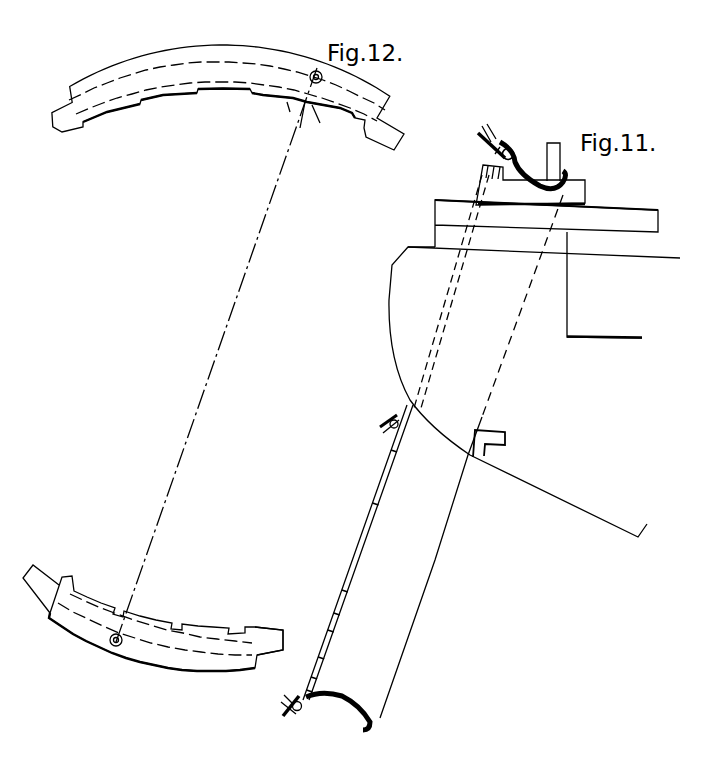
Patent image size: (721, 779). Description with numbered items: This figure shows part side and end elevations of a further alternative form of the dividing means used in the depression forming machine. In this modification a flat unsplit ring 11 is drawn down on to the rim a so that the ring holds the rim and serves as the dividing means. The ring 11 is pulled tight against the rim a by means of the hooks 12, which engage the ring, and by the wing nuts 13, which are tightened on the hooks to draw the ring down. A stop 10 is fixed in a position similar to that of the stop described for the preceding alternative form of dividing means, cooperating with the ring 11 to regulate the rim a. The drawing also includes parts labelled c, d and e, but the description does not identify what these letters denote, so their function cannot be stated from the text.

In FIG. 12, the stop 10 is at (311, 128).
In FIG. 12, the flat unsplit ring 11 is at (348, 86).
In FIG. 11, the hooks 12 is at (515, 154).
In FIG. 12, the wing nuts 13 is at (314, 72).
In FIG. 11, the wing nuts 13 is at (497, 135).
In FIG. 12, the rim a is at (268, 641).
In FIG. 11, the rim a is at (437, 527).
In FIG. 11, the pin c is at (560, 152).
In FIG. 11, the block d is at (539, 185).
In FIG. 11, the bar e is at (618, 215).